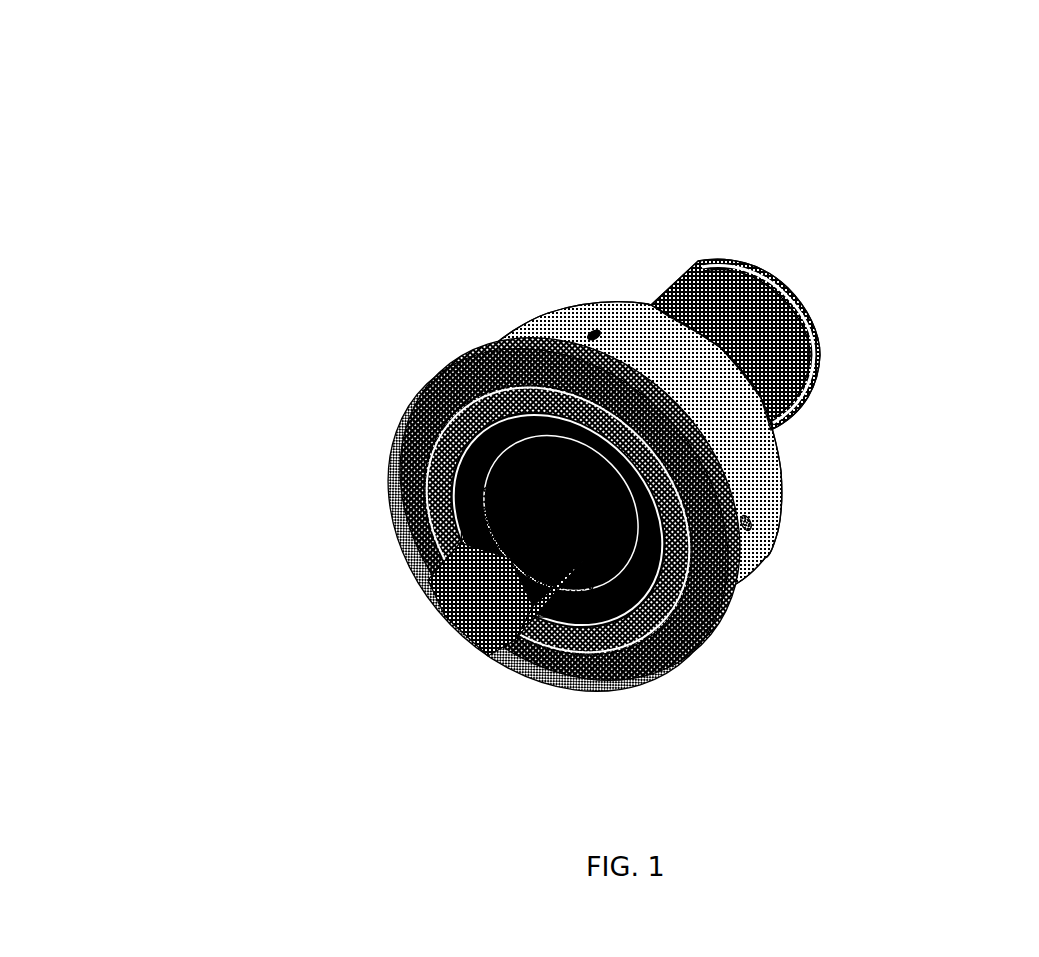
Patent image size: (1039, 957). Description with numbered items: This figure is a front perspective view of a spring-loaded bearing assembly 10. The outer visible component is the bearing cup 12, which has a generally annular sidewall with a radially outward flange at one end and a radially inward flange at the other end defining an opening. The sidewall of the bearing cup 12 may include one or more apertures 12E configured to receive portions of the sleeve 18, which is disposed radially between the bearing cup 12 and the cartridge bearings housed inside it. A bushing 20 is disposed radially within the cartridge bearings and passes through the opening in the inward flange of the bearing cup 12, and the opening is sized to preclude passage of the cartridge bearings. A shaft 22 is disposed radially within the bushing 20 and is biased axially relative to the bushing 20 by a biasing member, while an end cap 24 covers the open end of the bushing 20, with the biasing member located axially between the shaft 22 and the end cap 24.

The spring-loaded bearing assembly 10 is at (577, 218).
The bearing cup 12 is at (738, 478).
The apertures 12E is at (583, 322).
The sleeve 18 is at (430, 455).
The bushing 20 is at (790, 352).
The shaft 22 is at (450, 582).
The end cap 24 is at (775, 271).